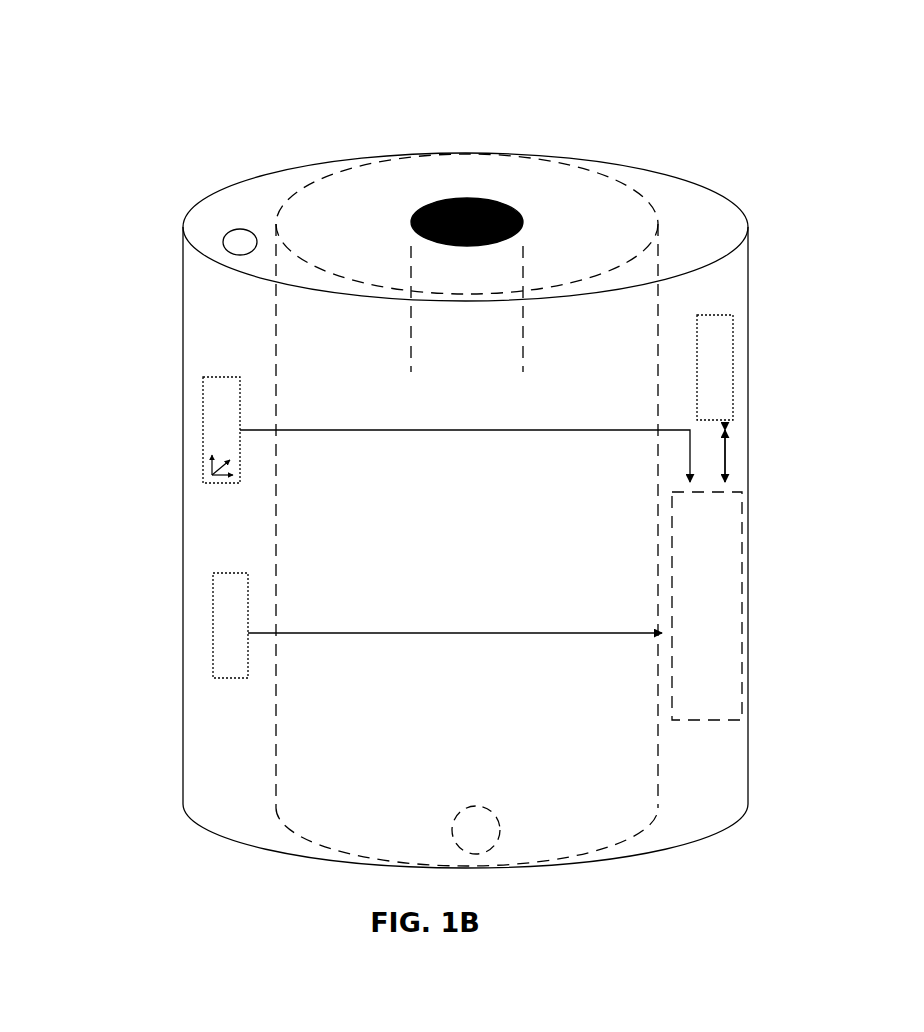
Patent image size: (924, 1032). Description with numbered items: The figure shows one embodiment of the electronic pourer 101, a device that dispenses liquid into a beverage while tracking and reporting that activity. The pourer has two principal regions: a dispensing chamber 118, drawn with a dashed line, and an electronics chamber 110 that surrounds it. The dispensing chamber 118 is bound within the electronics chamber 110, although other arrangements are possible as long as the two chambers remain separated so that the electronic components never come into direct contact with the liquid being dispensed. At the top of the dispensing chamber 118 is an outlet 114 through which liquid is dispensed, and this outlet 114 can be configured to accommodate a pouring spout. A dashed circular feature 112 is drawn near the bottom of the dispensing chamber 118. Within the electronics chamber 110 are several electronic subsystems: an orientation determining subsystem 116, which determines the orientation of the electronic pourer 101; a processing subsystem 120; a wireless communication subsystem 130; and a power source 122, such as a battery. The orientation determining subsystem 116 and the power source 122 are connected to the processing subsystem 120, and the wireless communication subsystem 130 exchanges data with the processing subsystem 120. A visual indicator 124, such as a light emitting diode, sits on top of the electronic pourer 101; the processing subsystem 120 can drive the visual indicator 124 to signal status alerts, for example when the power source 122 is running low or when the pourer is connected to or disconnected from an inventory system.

The electronic pourer 101 is at (353, 38).
The electronics chamber 110 is at (717, 285).
The bottom opening 112 is at (488, 830).
The outlet 114 is at (505, 204).
The orientation determining subsystem 116 is at (225, 413).
The dispensing chamber 118 is at (383, 690).
The processing subsystem 120 is at (725, 527).
The power source 122 is at (231, 611).
The visual indicator 124 is at (237, 242).
The wireless communication subsystem 130 is at (717, 403).